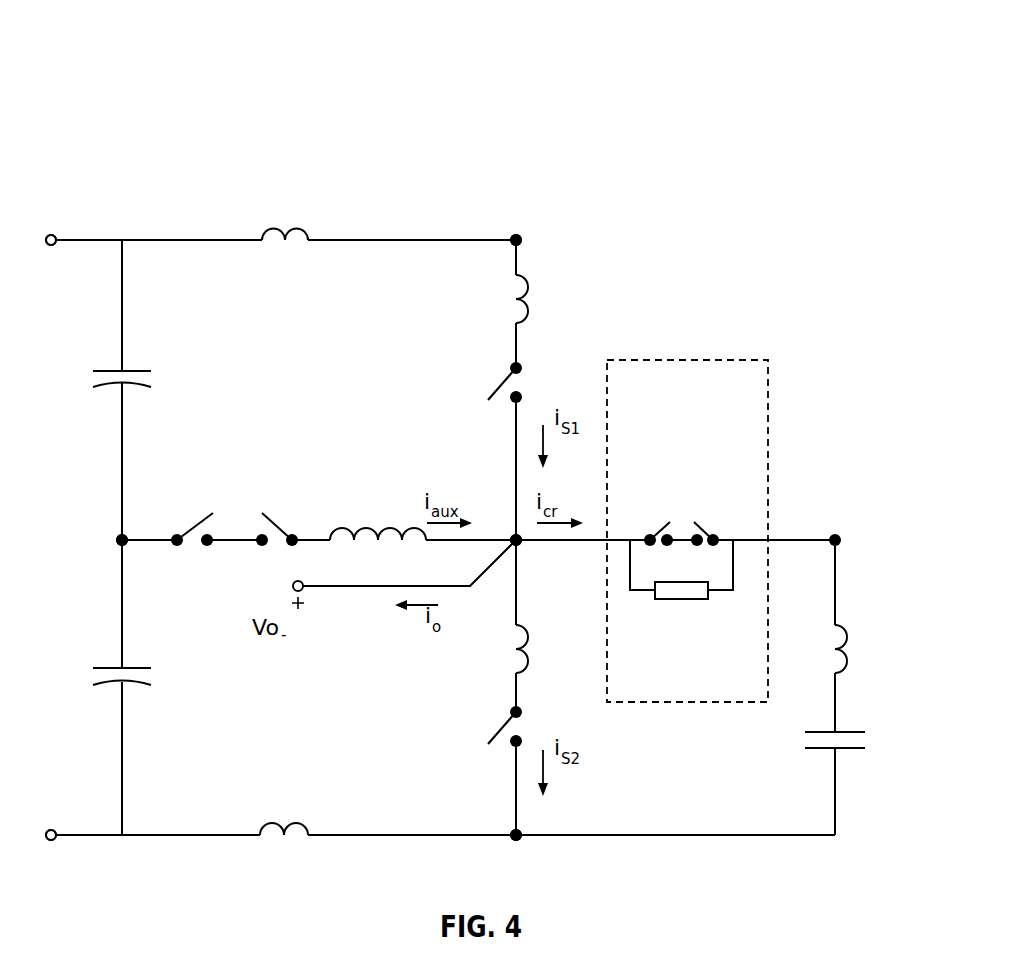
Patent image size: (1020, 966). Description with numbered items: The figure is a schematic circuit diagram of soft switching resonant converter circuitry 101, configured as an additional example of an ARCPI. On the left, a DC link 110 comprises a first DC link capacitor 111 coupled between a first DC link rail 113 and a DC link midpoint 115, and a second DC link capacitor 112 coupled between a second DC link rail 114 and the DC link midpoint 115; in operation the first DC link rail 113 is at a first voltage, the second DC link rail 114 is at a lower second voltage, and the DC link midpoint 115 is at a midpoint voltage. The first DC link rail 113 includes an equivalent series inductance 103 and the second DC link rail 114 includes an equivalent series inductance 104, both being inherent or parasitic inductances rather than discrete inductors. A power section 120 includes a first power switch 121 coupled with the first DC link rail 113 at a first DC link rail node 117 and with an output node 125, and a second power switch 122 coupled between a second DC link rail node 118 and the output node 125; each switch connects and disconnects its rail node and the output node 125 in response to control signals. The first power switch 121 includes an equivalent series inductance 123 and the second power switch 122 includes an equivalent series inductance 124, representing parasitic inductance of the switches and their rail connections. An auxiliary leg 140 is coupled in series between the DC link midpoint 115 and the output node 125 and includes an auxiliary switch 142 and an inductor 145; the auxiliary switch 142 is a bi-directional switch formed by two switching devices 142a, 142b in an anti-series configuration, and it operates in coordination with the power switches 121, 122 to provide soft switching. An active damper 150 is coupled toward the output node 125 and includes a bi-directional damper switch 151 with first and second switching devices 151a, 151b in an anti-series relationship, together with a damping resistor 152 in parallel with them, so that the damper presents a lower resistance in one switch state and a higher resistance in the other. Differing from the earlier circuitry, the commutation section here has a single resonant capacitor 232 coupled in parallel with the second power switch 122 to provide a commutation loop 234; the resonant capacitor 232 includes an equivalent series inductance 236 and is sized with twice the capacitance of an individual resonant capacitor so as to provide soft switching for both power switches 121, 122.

The circuitry 101 is at (836, 60).
The DC link 110 is at (126, 158).
The power section 120 is at (560, 193).
The first DC link rail 113 is at (73, 236).
The second DC link rail 114 is at (84, 832).
The equivalent series inductance 103 is at (294, 230).
The equivalent series inductance 104 is at (276, 825).
The first DC link capacitor 111 is at (112, 367).
The second DC link capacitor 112 is at (111, 664).
The DC link midpoint 115 is at (117, 536).
The first DC link rail node 117 is at (511, 232).
The second DC link rail node 118 is at (516, 842).
The first power switch 121 is at (502, 380).
The second power switch 122 is at (506, 728).
The equivalent series inductance 123 is at (530, 288).
The equivalent series inductance 124 is at (530, 640).
The output node 125 is at (512, 538).
The auxiliary leg 140 is at (312, 338).
The auxiliary switch 142 is at (231, 438).
The switching device 142a is at (198, 522).
The switching device 142b is at (278, 518).
The inductor 145 is at (368, 527).
The active damper 150 is at (688, 338).
The bi-directional damper switch 151 is at (689, 425).
The first switching device 151a is at (657, 530).
The second switching device 151b is at (706, 530).
The damping resistor 152 is at (677, 600).
The equivalent series inductance 236 is at (849, 640).
The resonant capacitor 232 is at (852, 730).
The commutation loop 234 is at (883, 785).